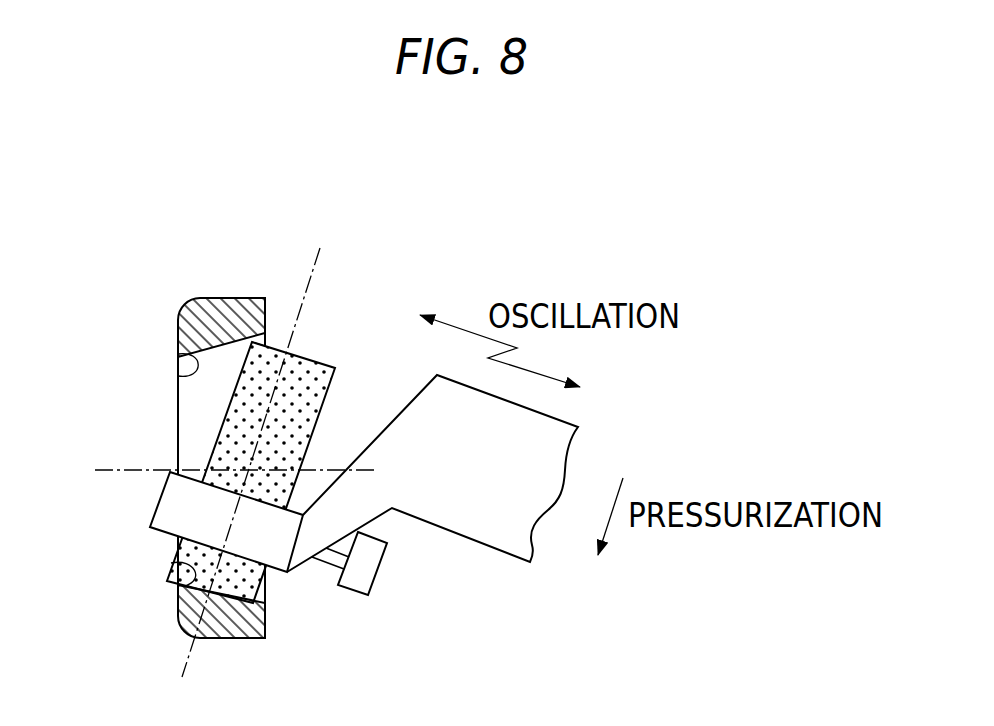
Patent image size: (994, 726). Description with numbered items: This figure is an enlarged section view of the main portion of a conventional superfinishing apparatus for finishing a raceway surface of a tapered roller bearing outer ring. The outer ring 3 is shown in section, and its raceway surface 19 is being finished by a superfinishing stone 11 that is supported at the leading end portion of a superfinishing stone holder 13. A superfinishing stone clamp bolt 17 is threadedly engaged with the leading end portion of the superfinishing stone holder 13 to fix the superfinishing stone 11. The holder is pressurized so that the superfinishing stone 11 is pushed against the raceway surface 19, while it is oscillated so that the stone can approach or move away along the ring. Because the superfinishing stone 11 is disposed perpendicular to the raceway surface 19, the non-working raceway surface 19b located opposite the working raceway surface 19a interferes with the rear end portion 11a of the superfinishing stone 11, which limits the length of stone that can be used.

The outer ring 3 is at (233, 287).
The superfinishing stone 11 is at (323, 348).
The rear end portion 11a is at (268, 337).
The superfinishing stone holder 13 is at (497, 556).
The superfinishing stone clamp bolt 17 is at (378, 578).
The raceway surface 19 is at (268, 595).
The working raceway surface 19a is at (170, 563).
The non-working raceway surface 19b is at (178, 375).